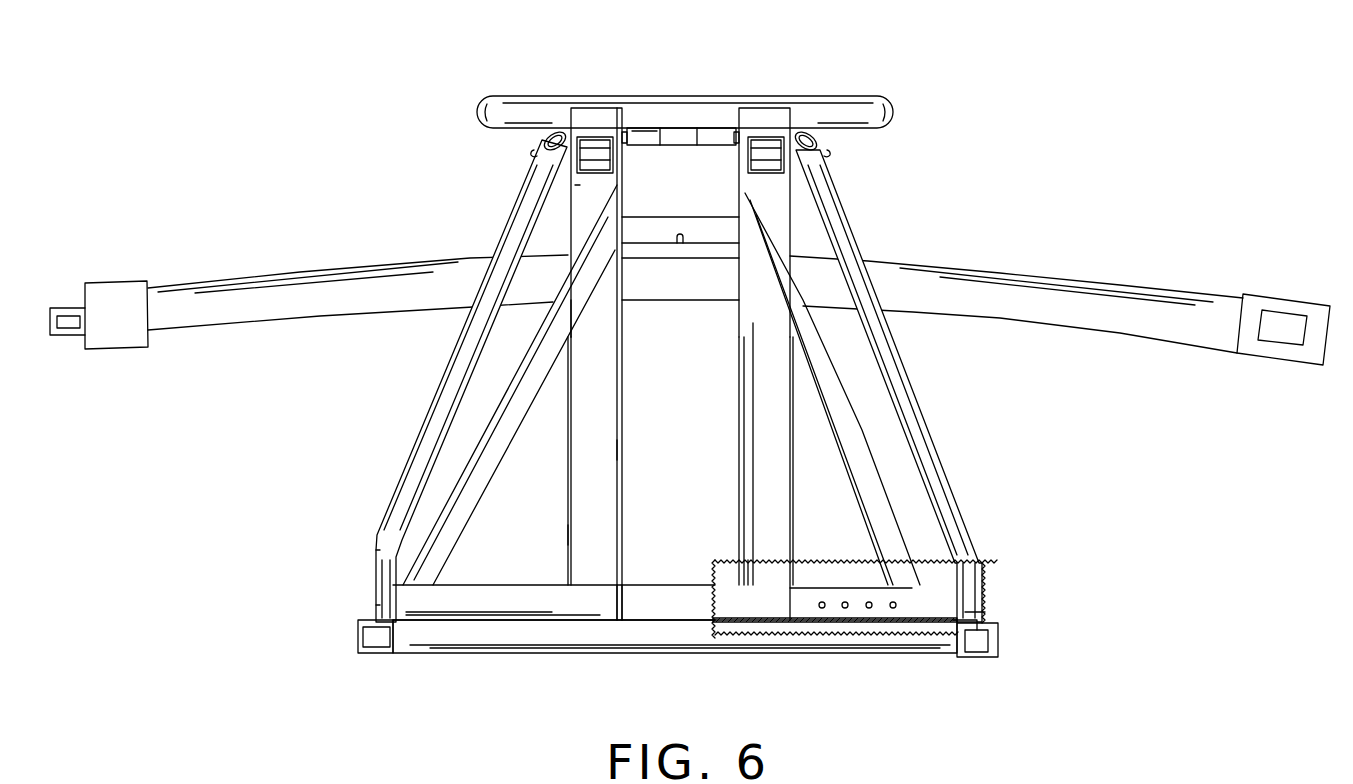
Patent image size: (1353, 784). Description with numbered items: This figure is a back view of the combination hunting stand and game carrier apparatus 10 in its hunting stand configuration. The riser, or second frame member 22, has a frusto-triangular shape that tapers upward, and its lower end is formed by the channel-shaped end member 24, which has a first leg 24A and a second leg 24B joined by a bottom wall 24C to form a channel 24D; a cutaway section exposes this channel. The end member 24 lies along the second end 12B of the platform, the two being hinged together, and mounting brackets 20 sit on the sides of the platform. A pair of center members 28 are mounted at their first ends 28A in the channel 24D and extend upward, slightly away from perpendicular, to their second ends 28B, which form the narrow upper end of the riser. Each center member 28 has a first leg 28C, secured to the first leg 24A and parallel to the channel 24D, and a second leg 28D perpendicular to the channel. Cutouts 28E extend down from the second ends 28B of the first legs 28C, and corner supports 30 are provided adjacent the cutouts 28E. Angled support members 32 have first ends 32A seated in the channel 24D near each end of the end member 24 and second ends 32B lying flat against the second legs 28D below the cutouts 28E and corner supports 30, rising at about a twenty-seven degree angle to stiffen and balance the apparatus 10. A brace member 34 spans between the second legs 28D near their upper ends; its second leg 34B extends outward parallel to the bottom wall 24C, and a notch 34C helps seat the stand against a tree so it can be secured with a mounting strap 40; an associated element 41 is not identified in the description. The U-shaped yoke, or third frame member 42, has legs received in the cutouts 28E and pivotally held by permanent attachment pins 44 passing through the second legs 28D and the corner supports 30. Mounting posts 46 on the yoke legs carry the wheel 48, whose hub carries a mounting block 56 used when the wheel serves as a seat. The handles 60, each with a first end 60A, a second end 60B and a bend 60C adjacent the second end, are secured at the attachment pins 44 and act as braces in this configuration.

The combination hunting stand and game carrier apparatus 10 is at (352, 90).
The second end of first frame member 12B is at (507, 630).
The mounting brackets 20 is at (360, 631).
The second frame member 22 is at (578, 435).
The end member 24 is at (457, 600).
The first leg of end member 24A is at (803, 600).
The second leg of end member 24B is at (637, 605).
The bottom wall of end member 24C is at (935, 600).
The channel 24D is at (919, 589).
The center members 28 is at (582, 470).
The first end of center member 28A is at (758, 603).
The second end of center member 28B is at (780, 190).
The first leg of center member 28C is at (590, 533).
The second leg of center member 28D is at (620, 450).
The cutouts 28E is at (586, 185).
The corner supports 30 is at (773, 135).
The angled support members 32 is at (858, 412).
The first end of support member 32A is at (985, 612).
The second end of support member 32B is at (757, 235).
The brace member 34 is at (637, 233).
The second leg of brace member 34B is at (663, 225).
The notch 34C is at (679, 243).
The mounting strap 40 is at (1070, 297).
The arm end block 41 is at (1268, 303).
The third frame member 42 is at (592, 134).
The attachment pins 44 is at (775, 146).
The mounting posts 46 is at (651, 134).
The wheel 48 is at (518, 103).
The mounting block 56 is at (687, 133).
The handles 60 is at (462, 385).
The first end of handle 60A is at (537, 165).
The second end of handle 60B is at (380, 605).
The bend 60C is at (378, 550).